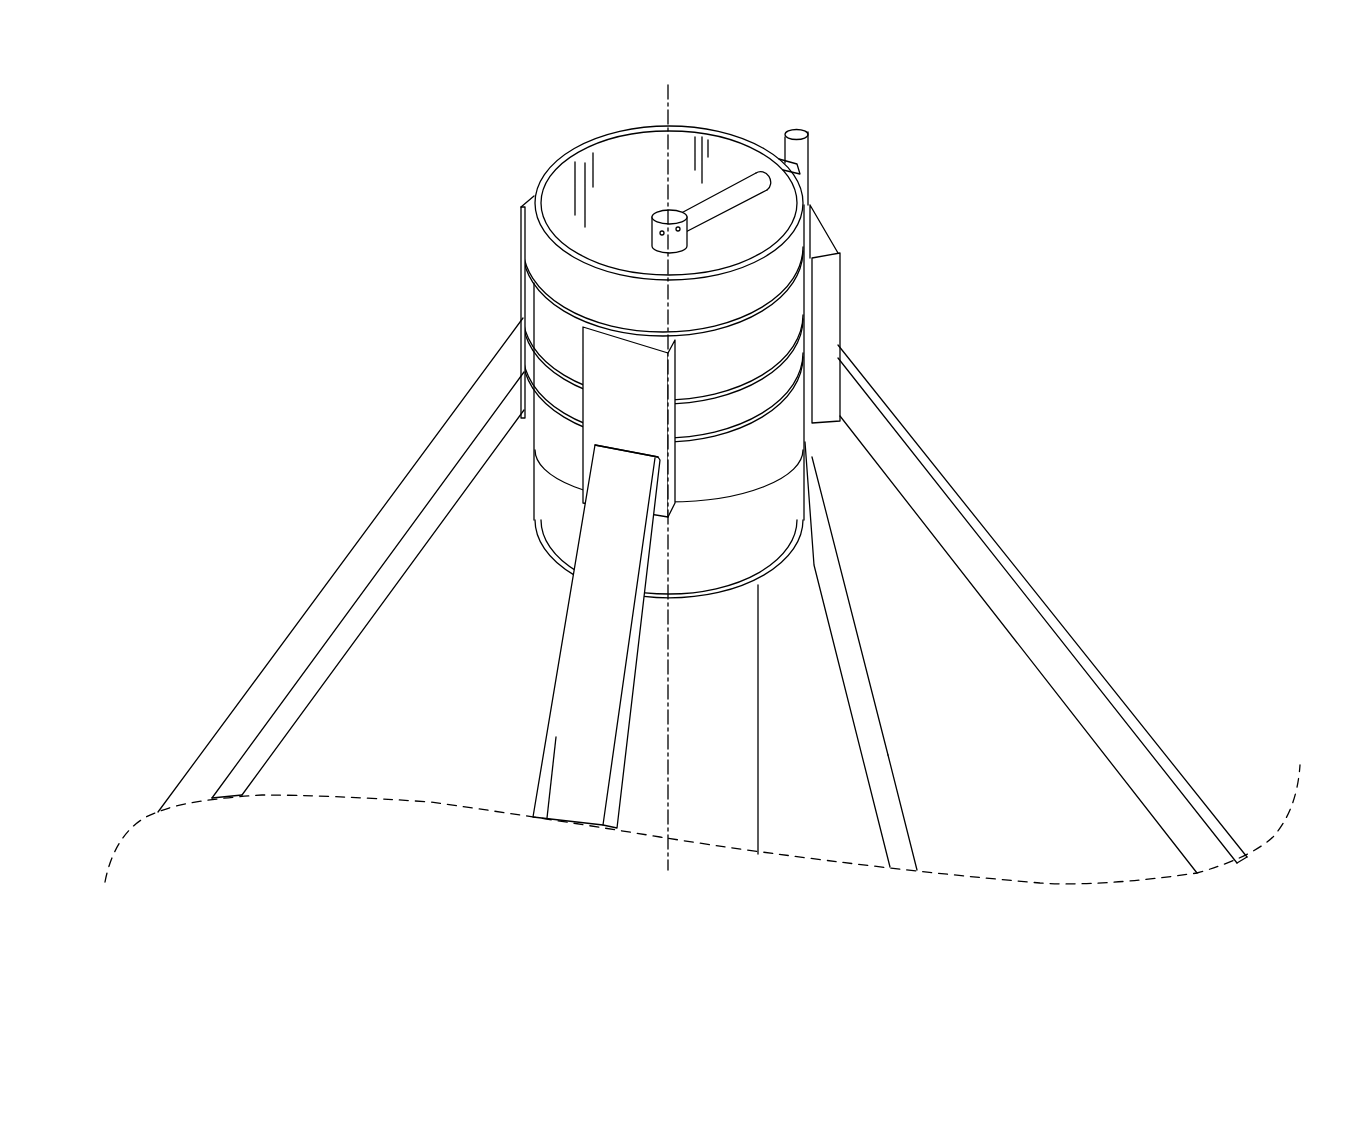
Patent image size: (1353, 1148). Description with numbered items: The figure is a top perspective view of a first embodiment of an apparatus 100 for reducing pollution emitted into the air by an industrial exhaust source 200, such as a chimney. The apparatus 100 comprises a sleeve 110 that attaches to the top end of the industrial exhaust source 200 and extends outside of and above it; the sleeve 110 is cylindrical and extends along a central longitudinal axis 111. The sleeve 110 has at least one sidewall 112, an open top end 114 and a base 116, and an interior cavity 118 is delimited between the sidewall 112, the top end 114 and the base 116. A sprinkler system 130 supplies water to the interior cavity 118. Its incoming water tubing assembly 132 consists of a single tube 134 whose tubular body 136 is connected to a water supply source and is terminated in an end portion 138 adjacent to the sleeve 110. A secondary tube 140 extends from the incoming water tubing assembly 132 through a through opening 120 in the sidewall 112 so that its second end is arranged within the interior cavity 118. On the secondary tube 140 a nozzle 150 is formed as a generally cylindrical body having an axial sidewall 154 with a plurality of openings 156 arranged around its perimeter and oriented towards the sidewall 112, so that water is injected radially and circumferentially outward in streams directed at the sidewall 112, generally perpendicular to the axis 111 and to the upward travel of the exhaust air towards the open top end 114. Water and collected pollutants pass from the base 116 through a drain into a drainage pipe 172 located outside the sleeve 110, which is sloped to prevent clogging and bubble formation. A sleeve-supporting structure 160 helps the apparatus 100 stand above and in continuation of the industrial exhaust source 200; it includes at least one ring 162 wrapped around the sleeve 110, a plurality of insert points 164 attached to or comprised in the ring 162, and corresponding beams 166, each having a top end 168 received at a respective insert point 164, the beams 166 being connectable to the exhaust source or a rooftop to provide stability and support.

The apparatus 100 is at (401, 104).
The sleeve 110 is at (560, 155).
The central longitudinal axis 111 is at (668, 110).
The sidewall 112 is at (558, 527).
The open top end 114 is at (601, 130).
The base 116 is at (732, 591).
The interior cavity 118 is at (630, 157).
The through opening 120 is at (754, 168).
The sprinkler system 130 is at (824, 141).
The incoming water tubing assembly 132 is at (903, 656).
The tube 134 is at (888, 755).
The tubular body 136 is at (898, 797).
The end portion 138 is at (809, 173).
The secondary tube 140 is at (722, 192).
The nozzle 150 is at (670, 227).
The sidewall 154 is at (657, 248).
The openings 156 is at (651, 225).
The sleeve-supporting structure 160 is at (977, 511).
The ring 162 is at (800, 312).
The insert points 164 is at (830, 270).
The beams 166 is at (702, 595).
The top end 168 is at (613, 445).
The drainage pipe 172 is at (527, 792).
The industrial exhaust source 200 is at (745, 761).